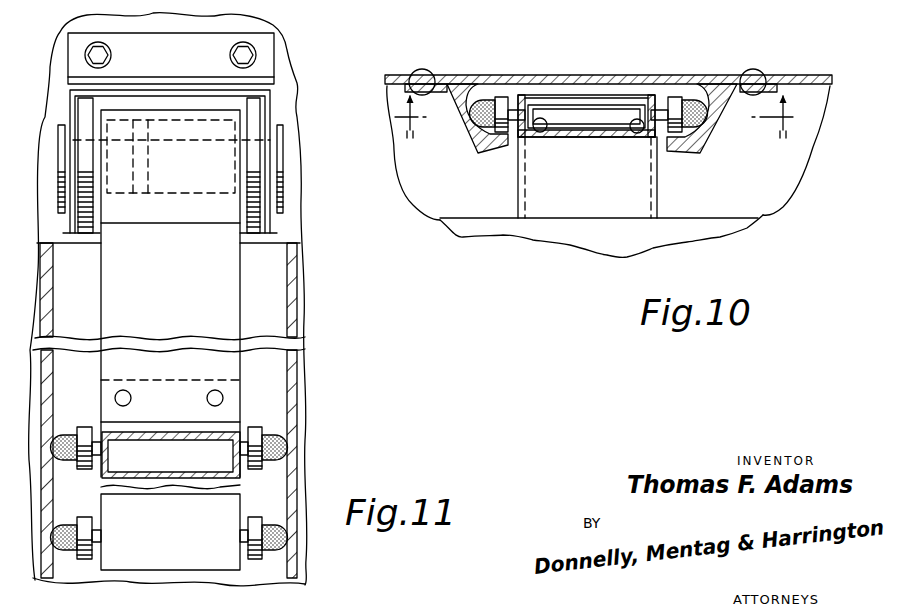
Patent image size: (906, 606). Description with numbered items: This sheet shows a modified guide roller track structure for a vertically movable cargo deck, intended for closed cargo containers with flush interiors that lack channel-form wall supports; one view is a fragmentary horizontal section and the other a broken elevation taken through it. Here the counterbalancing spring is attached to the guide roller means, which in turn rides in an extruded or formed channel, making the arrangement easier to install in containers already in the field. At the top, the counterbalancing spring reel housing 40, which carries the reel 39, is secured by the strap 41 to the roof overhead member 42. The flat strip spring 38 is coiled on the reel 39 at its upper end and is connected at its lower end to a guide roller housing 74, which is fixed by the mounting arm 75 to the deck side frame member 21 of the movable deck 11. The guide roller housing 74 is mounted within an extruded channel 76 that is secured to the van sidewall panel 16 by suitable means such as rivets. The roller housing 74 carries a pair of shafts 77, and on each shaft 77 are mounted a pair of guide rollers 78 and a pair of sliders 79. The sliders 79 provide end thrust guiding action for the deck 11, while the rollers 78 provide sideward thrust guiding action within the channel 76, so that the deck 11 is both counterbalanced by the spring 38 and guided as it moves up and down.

In FIG. 10, the vertically movable deck 11 is at (533, 239).
In FIG. 10, the outer strength panel 16 is at (803, 75).
In FIG. 10, the deck side frame member 21 is at (712, 232).
In FIG. 11, the flat strip spring 38 is at (220, 303).
In FIG. 10, the flat strip spring 38 is at (598, 140).
In FIG. 11, the reel 39 is at (254, 213).
In FIG. 11, the spring reel housing 40 is at (270, 98).
In FIG. 11, the strap 41 is at (266, 58).
In FIG. 11, the roof overhead member 42 is at (203, 122).
In FIG. 11, the guide roller housing 74 is at (220, 423).
In FIG. 10, the guide roller housing 74 is at (590, 97).
In FIG. 11, the mounting arm 75 is at (165, 432).
In FIG. 10, the mounting arm 75 is at (648, 204).
In FIG. 11, the extruded channel 76 is at (293, 262).
In FIG. 10, the extruded channel 76 is at (720, 116).
In FIG. 10, the shaft 77 is at (542, 112).
In FIG. 11, the guide roller 78 is at (85, 427).
In FIG. 10, the guide roller 78 is at (501, 97).
In FIG. 11, the slider 79 is at (66, 436).
In FIG. 10, the slider 79 is at (700, 105).